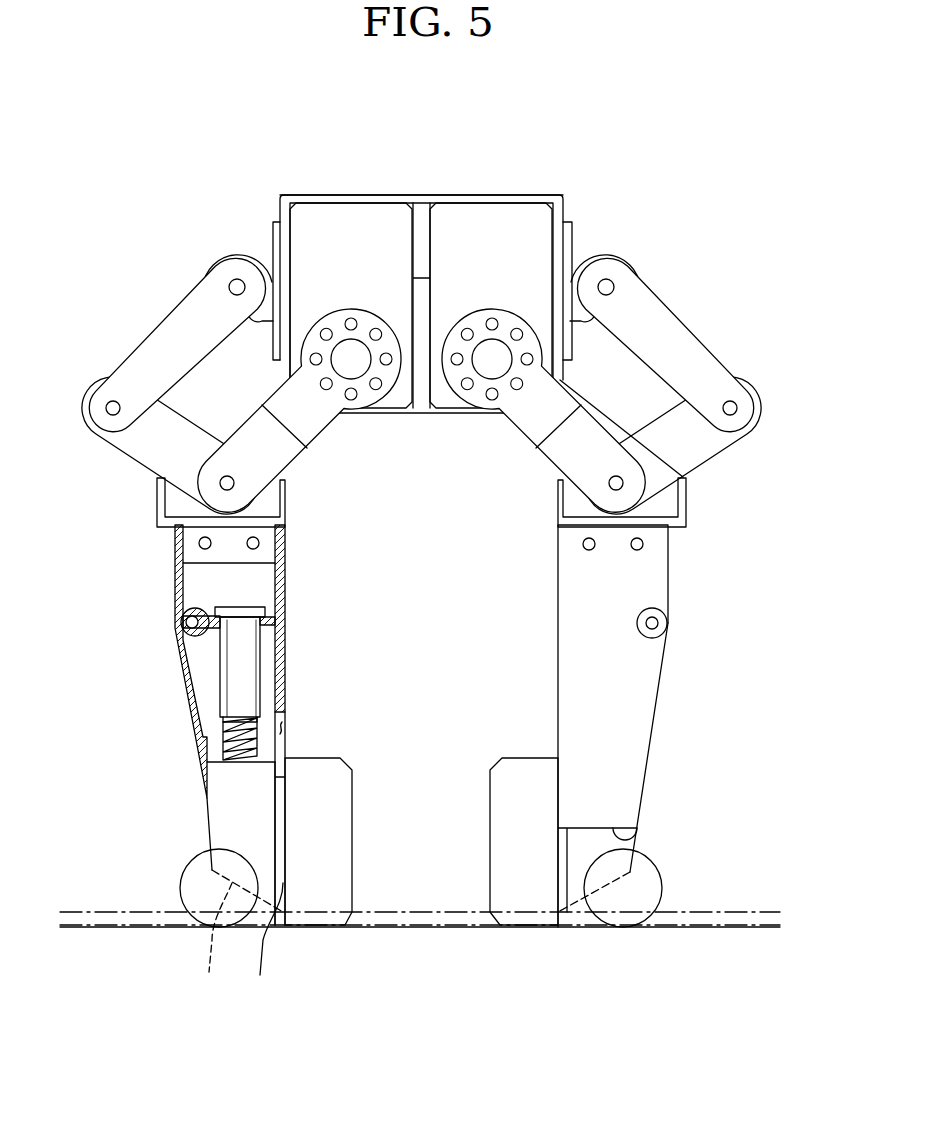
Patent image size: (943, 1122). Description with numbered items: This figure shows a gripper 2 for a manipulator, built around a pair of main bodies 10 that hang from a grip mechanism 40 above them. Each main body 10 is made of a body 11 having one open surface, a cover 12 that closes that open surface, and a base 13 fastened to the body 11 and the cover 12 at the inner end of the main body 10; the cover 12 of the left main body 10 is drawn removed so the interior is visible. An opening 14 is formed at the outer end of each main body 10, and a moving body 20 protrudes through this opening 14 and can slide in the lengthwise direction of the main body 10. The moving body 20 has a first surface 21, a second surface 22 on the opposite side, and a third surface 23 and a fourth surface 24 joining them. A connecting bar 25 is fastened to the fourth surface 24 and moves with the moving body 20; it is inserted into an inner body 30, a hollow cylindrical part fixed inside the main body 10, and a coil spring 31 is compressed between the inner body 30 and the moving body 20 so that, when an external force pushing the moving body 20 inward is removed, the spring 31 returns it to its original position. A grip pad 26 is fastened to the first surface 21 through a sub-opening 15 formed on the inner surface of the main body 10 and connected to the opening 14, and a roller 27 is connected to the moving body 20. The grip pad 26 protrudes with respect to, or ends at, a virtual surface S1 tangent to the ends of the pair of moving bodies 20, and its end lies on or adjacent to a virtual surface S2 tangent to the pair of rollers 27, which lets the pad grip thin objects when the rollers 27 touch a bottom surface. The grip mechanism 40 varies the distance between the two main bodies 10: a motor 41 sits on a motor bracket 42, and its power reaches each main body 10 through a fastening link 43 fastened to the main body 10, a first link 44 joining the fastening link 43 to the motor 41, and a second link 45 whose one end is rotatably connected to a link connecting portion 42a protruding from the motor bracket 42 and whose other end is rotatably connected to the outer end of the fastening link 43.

The gripper 2 is at (105, 100).
The main body 10 is at (660, 722).
The body 11 is at (180, 590).
The cover 12 is at (655, 585).
The base 13 is at (685, 505).
The opening 14 is at (637, 839).
The sub-opening 15 is at (285, 728).
The moving body 20 is at (220, 835).
The first surface 21 is at (267, 943).
The second surface 22 is at (205, 790).
The third surface 23 is at (214, 940).
The fourth surface 24 is at (266, 760).
The connecting bar 25 is at (237, 717).
The grip pad 26 is at (528, 918).
The roller 27 is at (648, 885).
The inner body 30 is at (233, 650).
The spring 31 is at (230, 740).
The grip mechanism 40 is at (509, 168).
The motor 41 is at (352, 225).
The motor bracket 42 is at (557, 197).
The link connecting portion 42a is at (585, 255).
The fastening link 43 is at (690, 445).
The first link 44 is at (590, 420).
The second link 45 is at (670, 330).
The virtual surface S1 is at (435, 912).
The virtual surface S2 is at (435, 932).